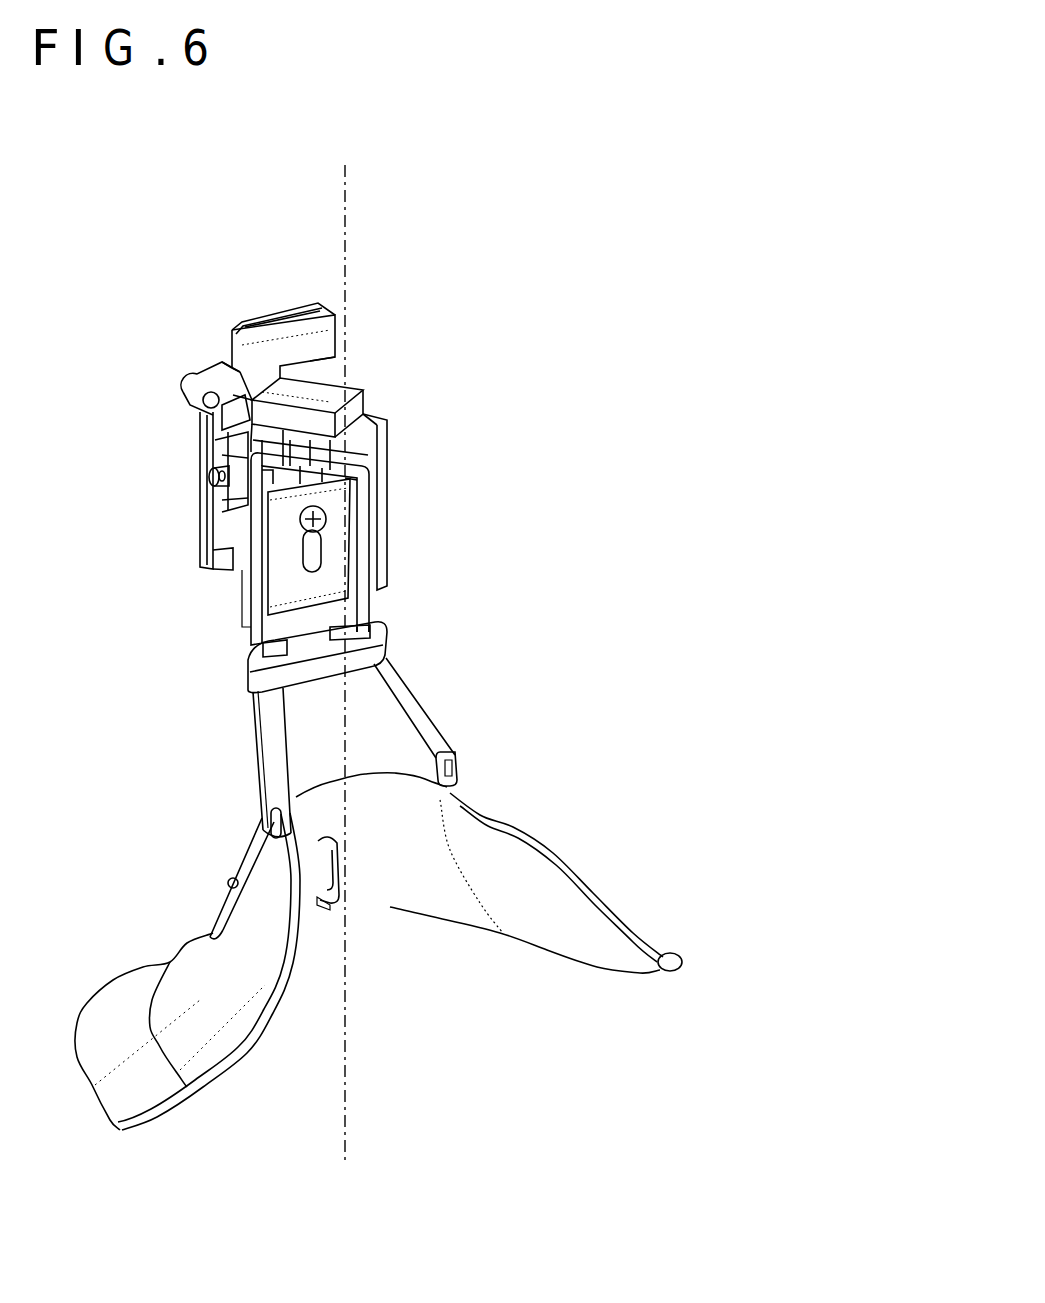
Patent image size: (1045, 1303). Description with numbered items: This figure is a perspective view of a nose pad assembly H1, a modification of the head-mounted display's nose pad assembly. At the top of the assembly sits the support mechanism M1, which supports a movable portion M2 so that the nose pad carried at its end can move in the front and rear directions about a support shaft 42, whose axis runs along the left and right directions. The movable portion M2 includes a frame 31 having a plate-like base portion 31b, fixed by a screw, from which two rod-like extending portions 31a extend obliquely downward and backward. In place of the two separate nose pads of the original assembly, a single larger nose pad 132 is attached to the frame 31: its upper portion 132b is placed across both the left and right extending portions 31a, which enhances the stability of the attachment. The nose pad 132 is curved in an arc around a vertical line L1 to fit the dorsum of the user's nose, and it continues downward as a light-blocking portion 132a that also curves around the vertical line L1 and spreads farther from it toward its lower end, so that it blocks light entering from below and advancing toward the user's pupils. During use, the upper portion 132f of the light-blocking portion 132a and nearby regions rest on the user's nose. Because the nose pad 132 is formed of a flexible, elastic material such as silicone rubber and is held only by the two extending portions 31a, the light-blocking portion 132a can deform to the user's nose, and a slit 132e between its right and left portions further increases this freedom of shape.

The vertical line L1 is at (343, 645).
The nose pad assembly H1 is at (362, 326).
The support mechanism M1 is at (285, 340).
The movable portion M2 is at (367, 420).
The support shaft 42 is at (208, 476).
The frame 31 is at (372, 608).
The extending portion 31a is at (364, 578).
The base portion 31b is at (353, 514).
The nose pad 132 is at (876, 685).
The light-blocking portion 132a is at (472, 954).
The upper portion 132b is at (382, 622).
The slit 132e is at (312, 883).
The upper portion 132f is at (270, 900).